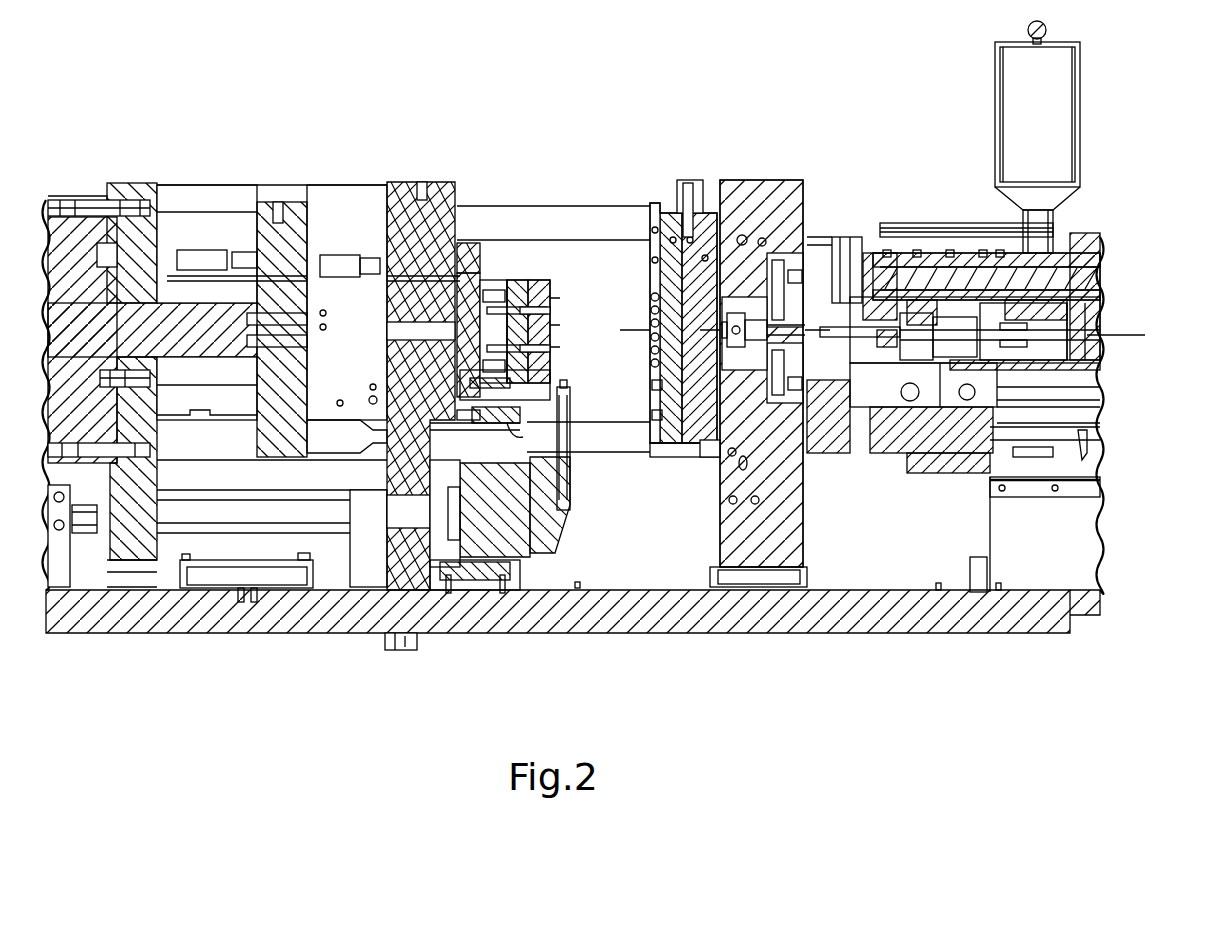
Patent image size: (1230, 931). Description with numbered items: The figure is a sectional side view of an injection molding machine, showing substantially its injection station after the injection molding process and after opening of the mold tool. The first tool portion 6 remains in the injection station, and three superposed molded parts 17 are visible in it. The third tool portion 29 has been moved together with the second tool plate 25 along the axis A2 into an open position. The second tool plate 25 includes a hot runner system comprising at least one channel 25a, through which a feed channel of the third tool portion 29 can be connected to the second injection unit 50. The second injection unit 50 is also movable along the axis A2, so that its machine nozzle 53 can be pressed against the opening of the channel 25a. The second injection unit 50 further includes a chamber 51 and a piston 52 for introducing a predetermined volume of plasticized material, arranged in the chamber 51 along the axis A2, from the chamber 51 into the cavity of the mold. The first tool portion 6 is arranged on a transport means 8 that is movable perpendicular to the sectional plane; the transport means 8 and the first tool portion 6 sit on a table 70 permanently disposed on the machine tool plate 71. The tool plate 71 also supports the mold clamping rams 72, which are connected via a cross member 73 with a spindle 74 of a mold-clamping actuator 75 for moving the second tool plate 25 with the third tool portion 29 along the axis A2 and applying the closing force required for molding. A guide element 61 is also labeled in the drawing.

The first tool portion 6 is at (528, 280).
The transport means 8 is at (493, 280).
The molded parts 17 is at (568, 350).
The second tool plate 25 is at (778, 200).
The channel 25a is at (760, 320).
The third tool portion 29 is at (682, 247).
The second injection unit 50 is at (1002, 306).
The chamber 51 is at (965, 320).
The piston 52 is at (985, 275).
The machine nozzle 53 is at (832, 240).
The guide 61 is at (458, 277).
The table 70 is at (628, 617).
The machine tool plate 71 is at (413, 570).
The mold clamping rams 72 is at (588, 212).
The cross member 73 is at (297, 213).
The spindle 74 is at (197, 317).
The mold-clamping actuator 75 is at (80, 197).
The axis A2 is at (1133, 335).